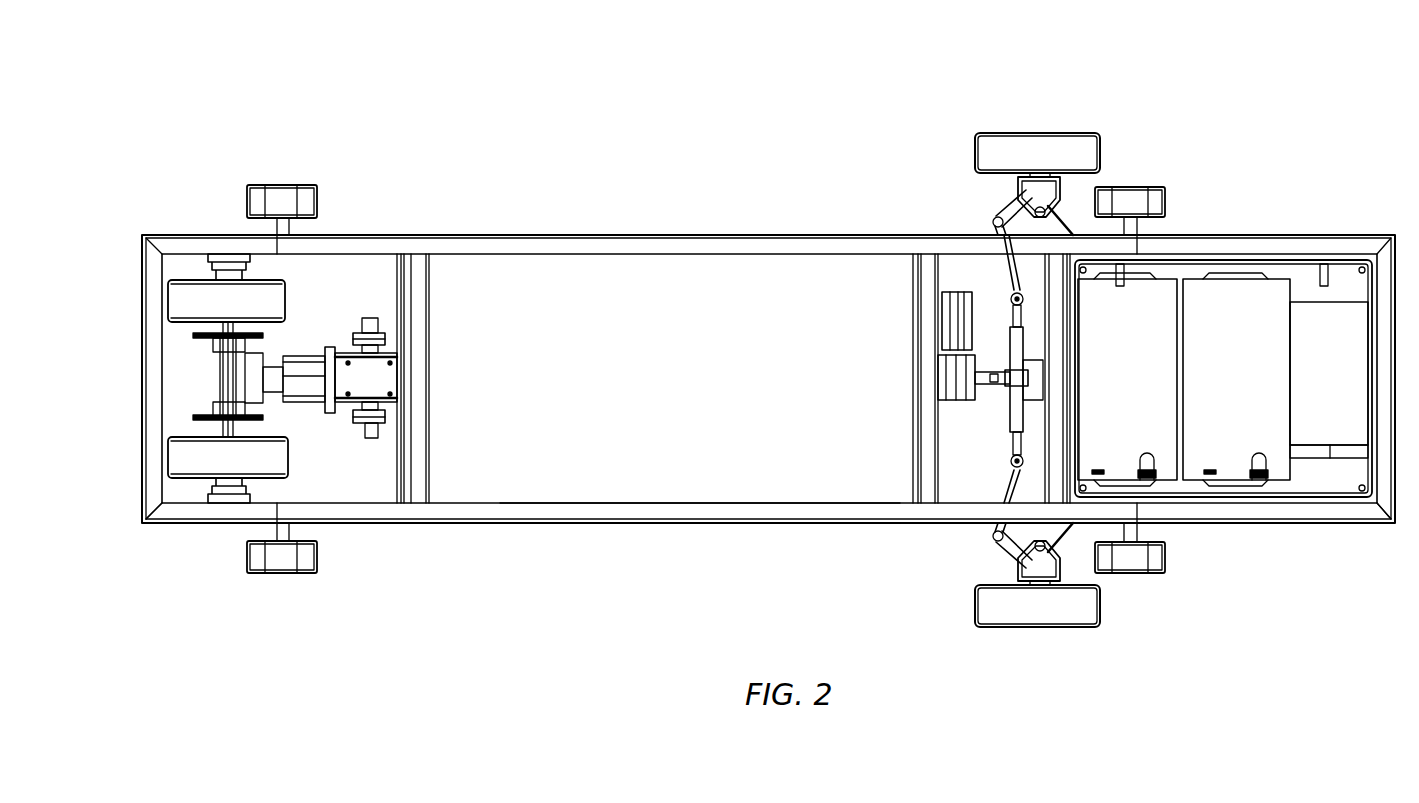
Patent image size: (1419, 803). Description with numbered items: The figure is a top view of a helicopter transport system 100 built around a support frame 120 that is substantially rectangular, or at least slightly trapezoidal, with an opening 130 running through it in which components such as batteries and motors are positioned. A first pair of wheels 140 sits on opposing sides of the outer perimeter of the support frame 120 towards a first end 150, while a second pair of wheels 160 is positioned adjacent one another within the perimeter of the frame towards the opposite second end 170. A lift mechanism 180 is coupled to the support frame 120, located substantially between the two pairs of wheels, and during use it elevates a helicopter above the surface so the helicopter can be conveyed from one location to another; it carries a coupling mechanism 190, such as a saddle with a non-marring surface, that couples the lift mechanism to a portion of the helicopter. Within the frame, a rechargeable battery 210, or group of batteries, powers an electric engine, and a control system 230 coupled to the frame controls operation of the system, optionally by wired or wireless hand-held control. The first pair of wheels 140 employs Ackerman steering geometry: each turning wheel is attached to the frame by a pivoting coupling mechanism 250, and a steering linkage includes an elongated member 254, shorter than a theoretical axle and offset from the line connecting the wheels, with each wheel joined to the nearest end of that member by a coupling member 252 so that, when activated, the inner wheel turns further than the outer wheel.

The helicopter transport system 100 is at (378, 104).
The support frame 120 is at (1196, 523).
The opening 130 is at (357, 288).
The first pair of wheels 140 is at (1070, 627).
The first end 150 is at (1360, 523).
The second pair of wheels 160 is at (190, 280).
The second end 170 is at (160, 523).
The lift mechanism 180 is at (697, 523).
The coupling mechanism 190 is at (289, 185).
The rechargeable battery 210 is at (1223, 378).
The control system 230 is at (1329, 380).
The pivoting coupling mechanism 250 is at (1000, 214).
The coupling member 252 is at (1008, 278).
The elongated member 254 is at (1015, 415).